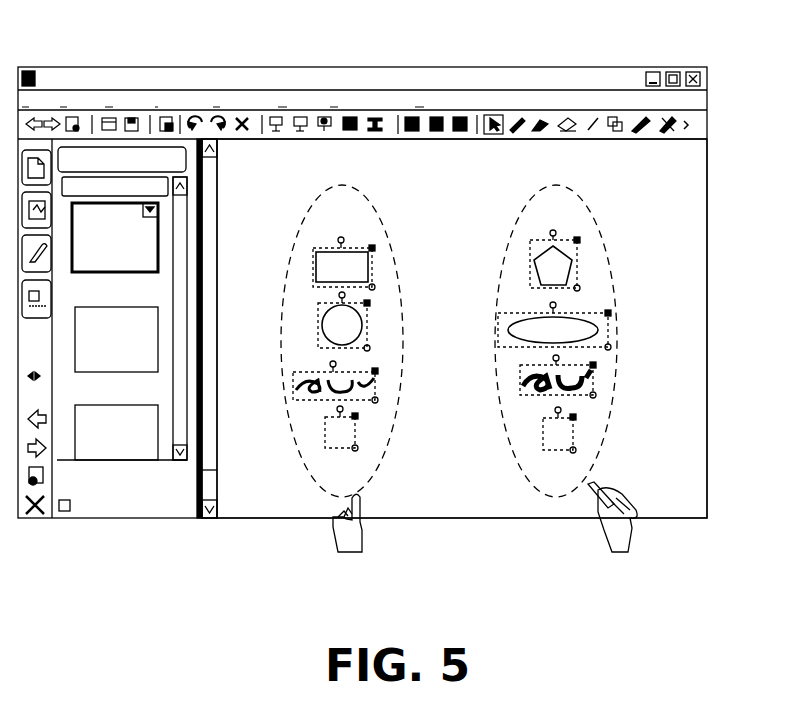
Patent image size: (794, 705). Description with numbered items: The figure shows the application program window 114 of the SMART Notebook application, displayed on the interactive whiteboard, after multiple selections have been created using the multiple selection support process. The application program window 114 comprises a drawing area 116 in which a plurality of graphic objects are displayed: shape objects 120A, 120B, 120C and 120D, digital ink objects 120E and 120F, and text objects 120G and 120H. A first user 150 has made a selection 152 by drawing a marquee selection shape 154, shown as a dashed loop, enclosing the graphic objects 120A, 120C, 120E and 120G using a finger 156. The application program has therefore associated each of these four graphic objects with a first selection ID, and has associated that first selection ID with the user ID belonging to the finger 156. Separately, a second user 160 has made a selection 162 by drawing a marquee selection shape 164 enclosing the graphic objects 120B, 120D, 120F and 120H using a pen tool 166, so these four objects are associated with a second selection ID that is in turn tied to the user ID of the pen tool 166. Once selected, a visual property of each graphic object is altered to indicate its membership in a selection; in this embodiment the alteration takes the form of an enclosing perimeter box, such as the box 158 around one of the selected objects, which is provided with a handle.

The application program window 114 is at (456, 67).
The drawing area 116 is at (670, 375).
The shape object 120A is at (318, 250).
The shape object 120B is at (565, 255).
The shape object 120C is at (318, 305).
The shape object 120D is at (567, 318).
The digital ink object 120E is at (318, 388).
The digital ink object 120F is at (565, 392).
The text object 120G is at (332, 437).
The text object 120H is at (560, 452).
The first user 150 is at (355, 553).
The selection 152 is at (376, 188).
The marquee selection shape 154 is at (402, 265).
The finger 156 is at (360, 496).
The box 158 is at (375, 383).
The second user 160 is at (625, 548).
The selection 162 is at (588, 188).
The marquee selection shape 164 is at (505, 432).
The pen tool 166 is at (588, 487).